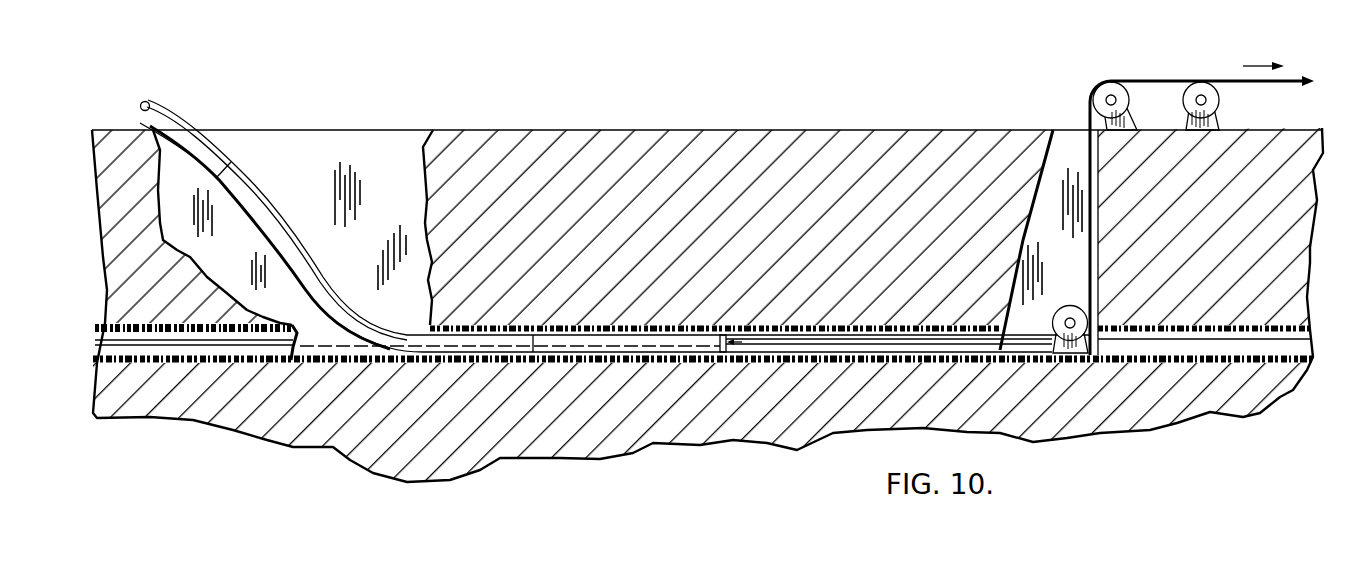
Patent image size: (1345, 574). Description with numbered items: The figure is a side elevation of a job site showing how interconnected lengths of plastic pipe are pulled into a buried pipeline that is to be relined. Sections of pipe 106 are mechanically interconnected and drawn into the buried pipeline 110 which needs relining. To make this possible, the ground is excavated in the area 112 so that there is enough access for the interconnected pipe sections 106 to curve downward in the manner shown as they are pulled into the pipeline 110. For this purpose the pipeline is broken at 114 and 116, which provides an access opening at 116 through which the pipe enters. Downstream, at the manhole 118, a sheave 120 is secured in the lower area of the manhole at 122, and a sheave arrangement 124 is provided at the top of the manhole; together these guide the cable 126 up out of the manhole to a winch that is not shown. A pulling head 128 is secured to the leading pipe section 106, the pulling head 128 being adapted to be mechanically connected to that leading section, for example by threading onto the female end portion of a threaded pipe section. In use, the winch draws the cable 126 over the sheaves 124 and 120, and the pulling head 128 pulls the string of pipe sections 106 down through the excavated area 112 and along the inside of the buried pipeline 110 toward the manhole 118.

The pipe section 106 is at (263, 212).
The buried pipeline 110 is at (520, 322).
The excavation area 112 is at (386, 154).
The pipeline break 114 is at (303, 337).
The access opening 116 is at (437, 314).
The manhole 118 is at (1043, 158).
The sheave 120 is at (1100, 330).
The lower area of manhole 122 is at (1060, 356).
The sheave arrangement 124 is at (1136, 142).
The cable 126 is at (1234, 79).
The pulling head 128 is at (733, 358).